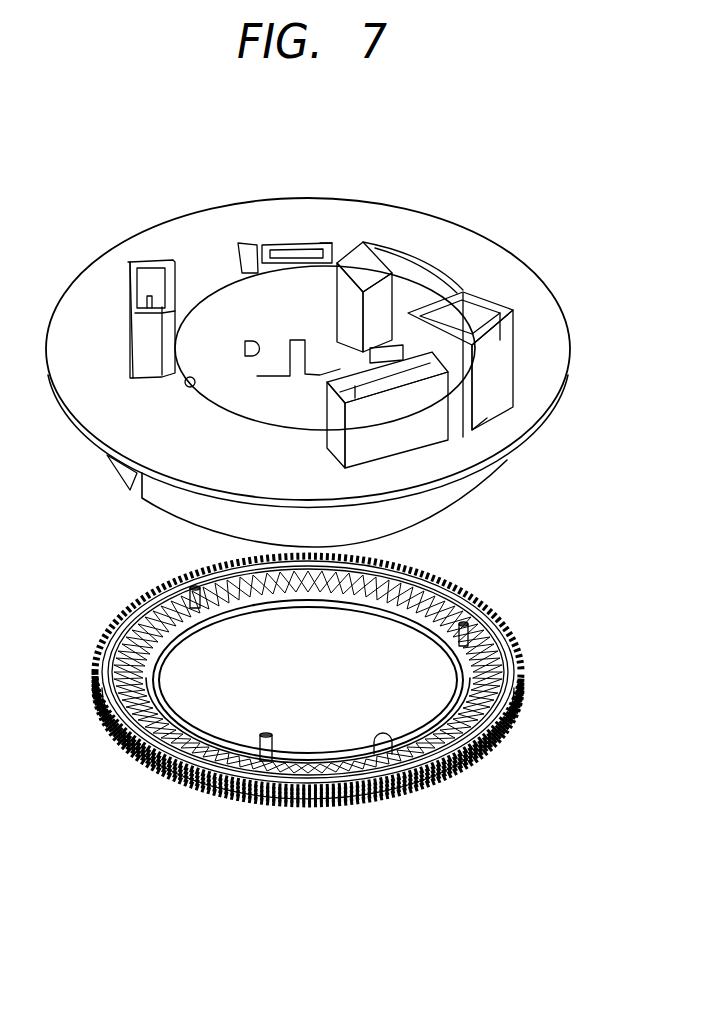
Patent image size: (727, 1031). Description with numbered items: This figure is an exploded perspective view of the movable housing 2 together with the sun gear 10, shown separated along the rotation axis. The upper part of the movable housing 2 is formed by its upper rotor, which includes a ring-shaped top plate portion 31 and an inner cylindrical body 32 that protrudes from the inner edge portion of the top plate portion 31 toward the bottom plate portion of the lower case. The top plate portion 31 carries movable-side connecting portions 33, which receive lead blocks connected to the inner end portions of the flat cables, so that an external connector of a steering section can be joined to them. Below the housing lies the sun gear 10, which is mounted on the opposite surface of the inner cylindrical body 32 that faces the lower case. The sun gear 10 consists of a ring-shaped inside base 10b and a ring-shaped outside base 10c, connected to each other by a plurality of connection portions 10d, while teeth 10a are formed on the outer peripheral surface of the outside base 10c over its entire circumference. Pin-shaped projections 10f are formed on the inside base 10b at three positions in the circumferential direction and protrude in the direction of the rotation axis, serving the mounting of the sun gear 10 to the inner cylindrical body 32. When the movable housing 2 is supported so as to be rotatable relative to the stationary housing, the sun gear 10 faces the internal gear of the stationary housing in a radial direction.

The movable housing 2 is at (336, 192).
The top plate portion 31 is at (458, 240).
The inner cylindrical body 32 is at (457, 497).
The movable-side connecting portions 33 is at (438, 425).
The sun gear 10 is at (158, 781).
The teeth 10a is at (313, 802).
The inside base 10b is at (394, 768).
The outside base 10c is at (477, 753).
The connection portions 10d is at (100, 703).
The projections 10f is at (250, 750).